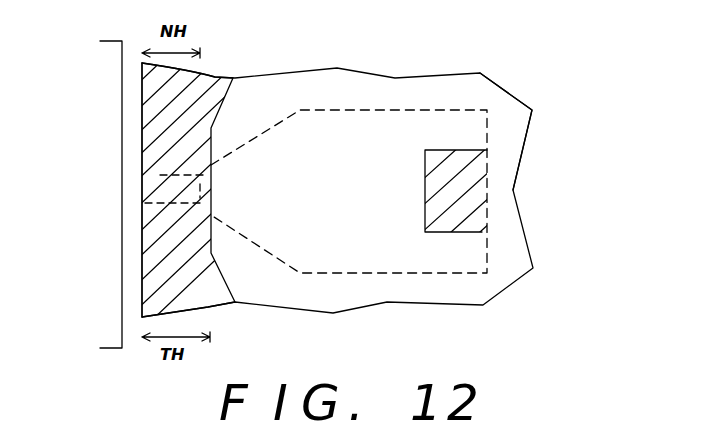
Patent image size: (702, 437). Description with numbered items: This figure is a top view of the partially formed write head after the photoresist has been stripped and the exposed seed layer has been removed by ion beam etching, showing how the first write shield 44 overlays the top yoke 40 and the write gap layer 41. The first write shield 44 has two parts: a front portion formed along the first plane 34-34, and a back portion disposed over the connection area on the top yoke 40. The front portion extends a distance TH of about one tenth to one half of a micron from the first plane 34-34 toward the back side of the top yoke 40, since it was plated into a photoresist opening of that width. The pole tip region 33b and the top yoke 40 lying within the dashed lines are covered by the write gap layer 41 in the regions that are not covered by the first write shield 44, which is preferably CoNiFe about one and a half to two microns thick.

The pole tip region 33b is at (157, 203).
The first plane 34 is at (97, 197).
The top yoke layer 40 is at (387, 109).
The write gap layer 41 is at (507, 110).
The first write shield 44 is at (157, 110).